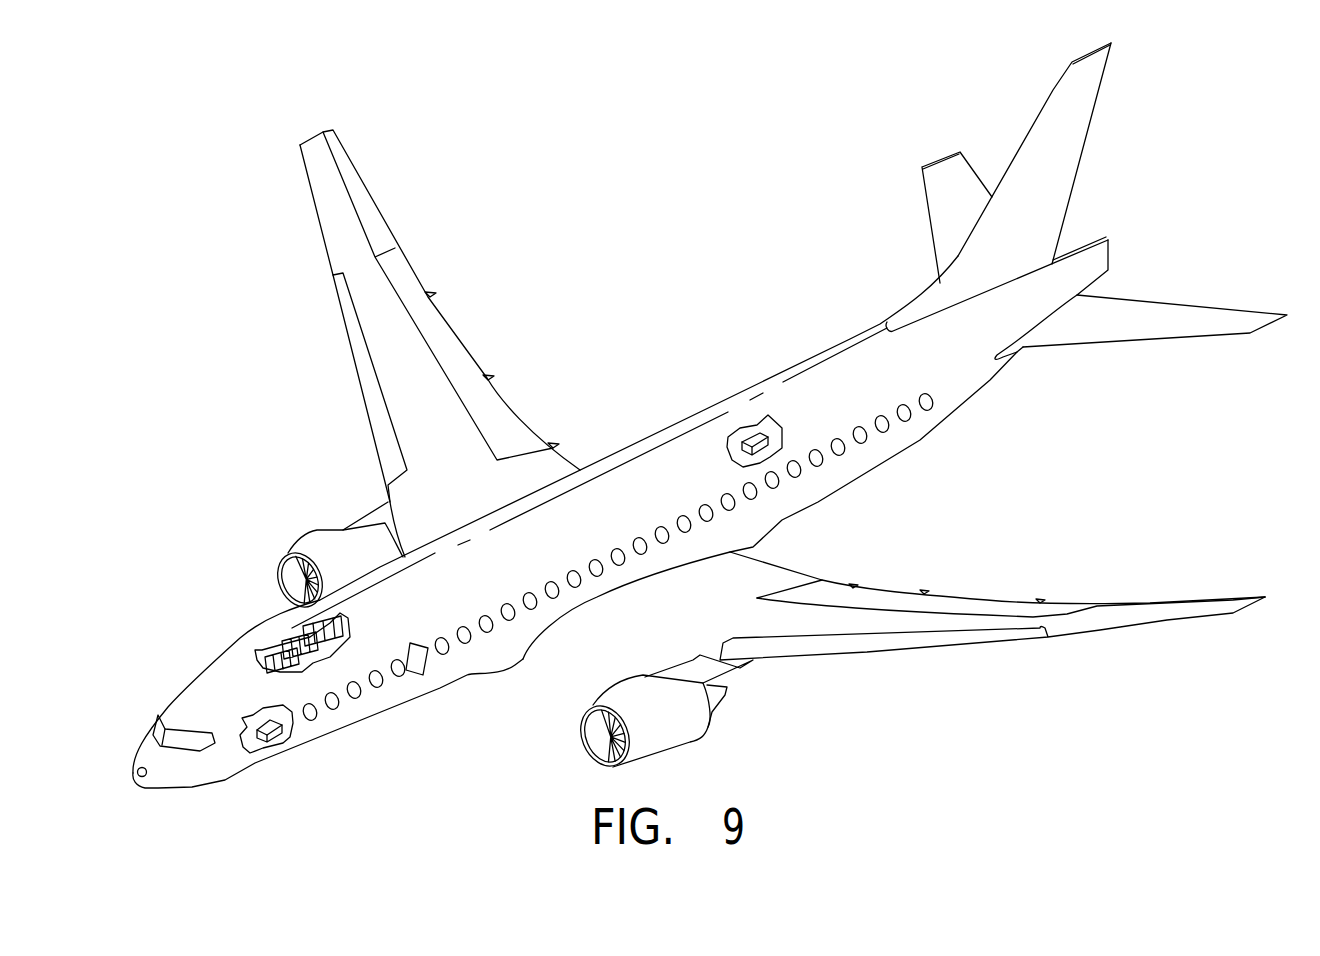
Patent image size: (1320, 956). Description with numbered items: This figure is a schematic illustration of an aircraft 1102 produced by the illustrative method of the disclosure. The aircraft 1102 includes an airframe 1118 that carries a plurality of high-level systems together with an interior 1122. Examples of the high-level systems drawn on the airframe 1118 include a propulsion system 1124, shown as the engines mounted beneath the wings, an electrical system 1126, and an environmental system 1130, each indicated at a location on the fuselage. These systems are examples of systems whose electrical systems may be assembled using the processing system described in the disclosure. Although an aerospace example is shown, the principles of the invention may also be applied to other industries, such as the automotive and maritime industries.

The aircraft 1102 is at (266, 320).
The airframe 1118 is at (256, 608).
The interior 1122 is at (310, 672).
The propulsion system 1124 is at (315, 540).
The electrical system 1126 is at (262, 724).
The environmental system 1130 is at (752, 437).